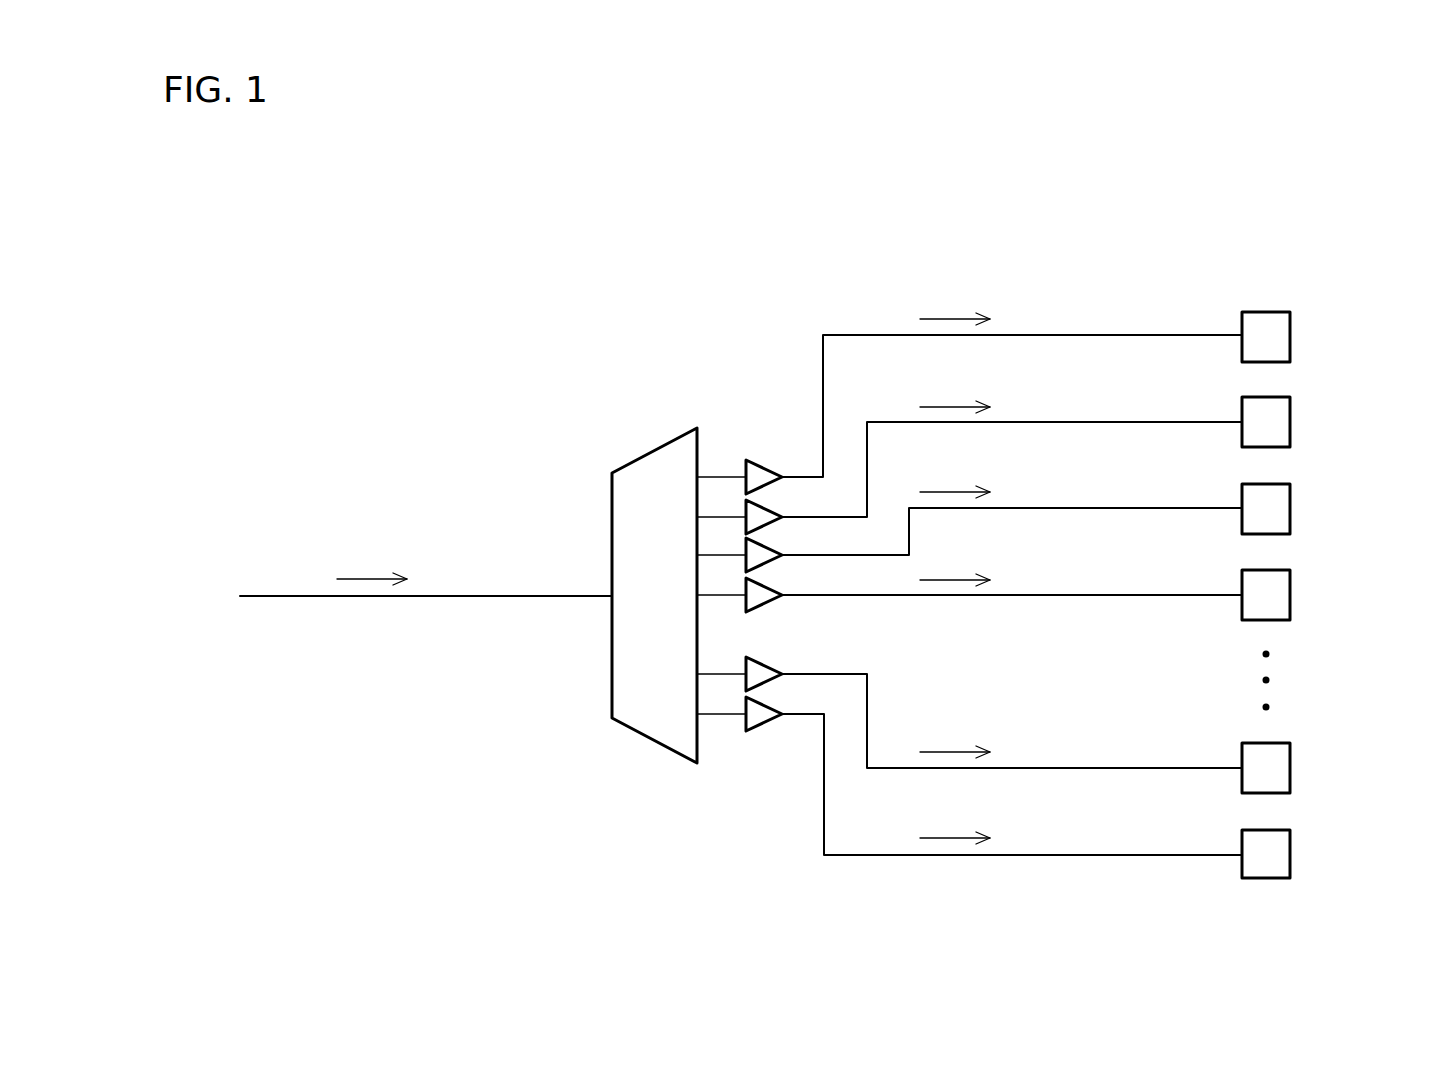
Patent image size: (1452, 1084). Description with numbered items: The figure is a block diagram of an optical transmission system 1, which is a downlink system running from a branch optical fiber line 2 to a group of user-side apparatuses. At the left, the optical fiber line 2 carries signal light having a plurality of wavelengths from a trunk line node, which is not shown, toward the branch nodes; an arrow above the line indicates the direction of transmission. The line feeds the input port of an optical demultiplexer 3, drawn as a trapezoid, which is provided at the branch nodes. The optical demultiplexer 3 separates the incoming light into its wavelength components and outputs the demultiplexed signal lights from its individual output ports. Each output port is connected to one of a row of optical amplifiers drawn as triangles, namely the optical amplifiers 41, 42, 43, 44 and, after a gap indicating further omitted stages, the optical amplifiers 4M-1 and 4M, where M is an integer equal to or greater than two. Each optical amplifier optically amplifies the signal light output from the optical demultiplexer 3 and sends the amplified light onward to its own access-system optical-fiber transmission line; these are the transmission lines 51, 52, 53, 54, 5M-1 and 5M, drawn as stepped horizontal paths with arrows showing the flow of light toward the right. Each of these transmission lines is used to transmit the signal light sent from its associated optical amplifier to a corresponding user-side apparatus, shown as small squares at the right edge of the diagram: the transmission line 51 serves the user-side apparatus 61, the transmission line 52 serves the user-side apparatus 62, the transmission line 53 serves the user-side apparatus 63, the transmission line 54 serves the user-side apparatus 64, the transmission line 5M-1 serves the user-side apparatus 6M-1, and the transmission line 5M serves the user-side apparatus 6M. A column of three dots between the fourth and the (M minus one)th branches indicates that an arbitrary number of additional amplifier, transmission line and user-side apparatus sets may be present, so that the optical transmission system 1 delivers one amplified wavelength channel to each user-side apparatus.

The optical transmission system 1 is at (1143, 252).
The optical fiber line 2 is at (476, 598).
The optical demultiplexer 3 is at (647, 745).
The optical amplifier 41 is at (760, 463).
The optical amplifier 42 is at (760, 501).
The optical amplifier 43 is at (760, 539).
The optical amplifier 44 is at (760, 581).
The optical amplifier 4M-1 is at (760, 662).
The optical amplifier 4M is at (760, 700).
The access-system optical-fiber transmission line 51 is at (824, 368).
The access-system optical-fiber transmission line 52 is at (868, 452).
The access-system optical-fiber transmission line 53 is at (910, 535).
The access-system optical-fiber transmission line 54 is at (913, 597).
The access-system optical-fiber transmission line 5M-1 is at (868, 714).
The access-system optical-fiber transmission line 5M is at (825, 800).
The user-side apparatus 61 is at (1291, 335).
The user-side apparatus 62 is at (1291, 422).
The user-side apparatus 63 is at (1291, 508).
The user-side apparatus 64 is at (1291, 595).
The user-side apparatus 6M-1 is at (1291, 768).
The user-side apparatus 6M is at (1291, 854).